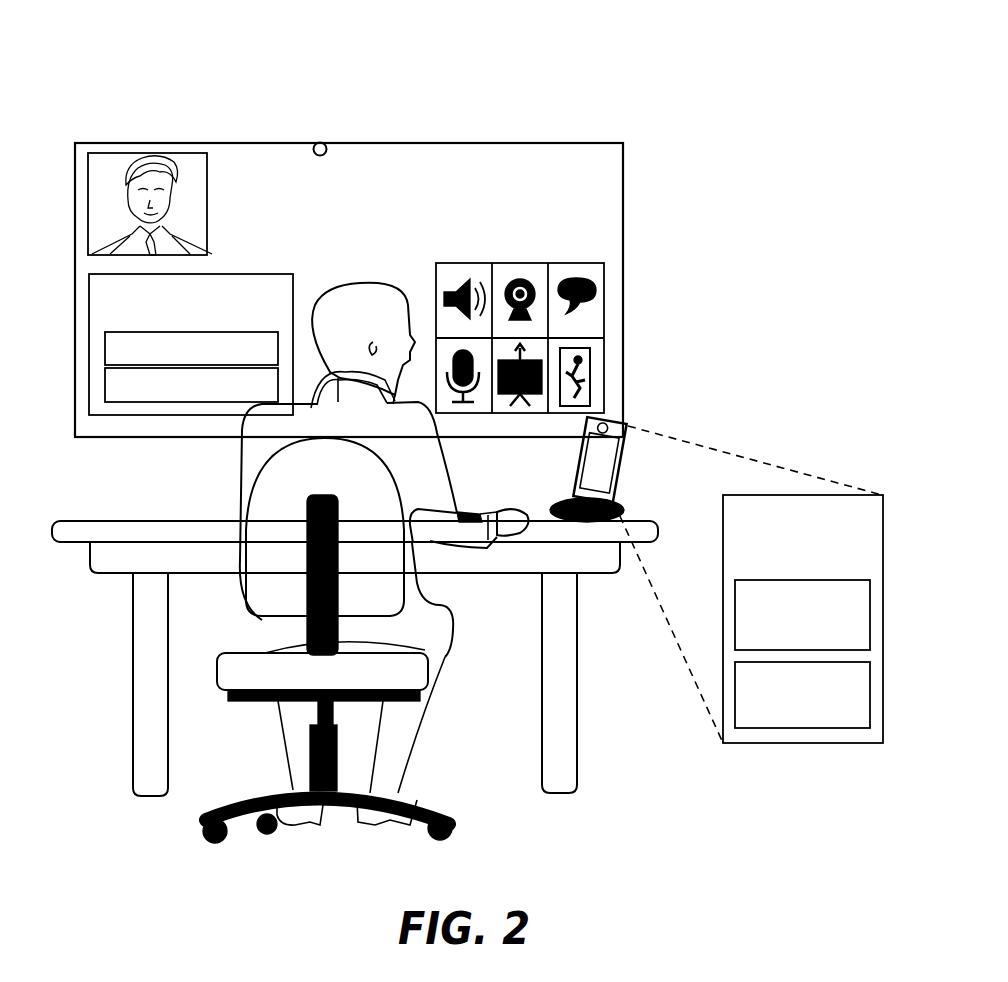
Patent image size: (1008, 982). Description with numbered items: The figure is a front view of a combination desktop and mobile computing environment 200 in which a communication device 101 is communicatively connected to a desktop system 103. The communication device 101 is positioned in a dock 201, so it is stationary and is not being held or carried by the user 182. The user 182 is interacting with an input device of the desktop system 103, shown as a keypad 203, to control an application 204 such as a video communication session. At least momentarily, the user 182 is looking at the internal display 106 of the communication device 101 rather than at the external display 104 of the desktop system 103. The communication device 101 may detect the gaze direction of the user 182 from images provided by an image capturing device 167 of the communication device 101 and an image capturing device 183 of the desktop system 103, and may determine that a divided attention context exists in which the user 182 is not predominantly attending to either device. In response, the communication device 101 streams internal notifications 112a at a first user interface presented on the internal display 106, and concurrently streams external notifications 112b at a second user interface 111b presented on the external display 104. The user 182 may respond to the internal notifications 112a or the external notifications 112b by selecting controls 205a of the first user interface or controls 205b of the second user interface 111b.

The combination desktop and mobile computing environment 200 is at (130, 47).
The desktop system 103 is at (431, 129).
The external display 104 is at (72, 176).
The image capturing device 183 is at (318, 136).
The application 204 is at (577, 173).
The second user interface 111b is at (191, 344).
The external notifications 112b is at (191, 348).
The controls 205b is at (191, 385).
The user 182 is at (408, 769).
The keypad 203 is at (470, 507).
The dock 201 is at (579, 514).
The communication device 101 is at (634, 419).
The internal display 106 is at (599, 463).
The image capturing device 167 is at (603, 428).
The internal notifications 112a is at (803, 619).
The controls 205a is at (802, 695).